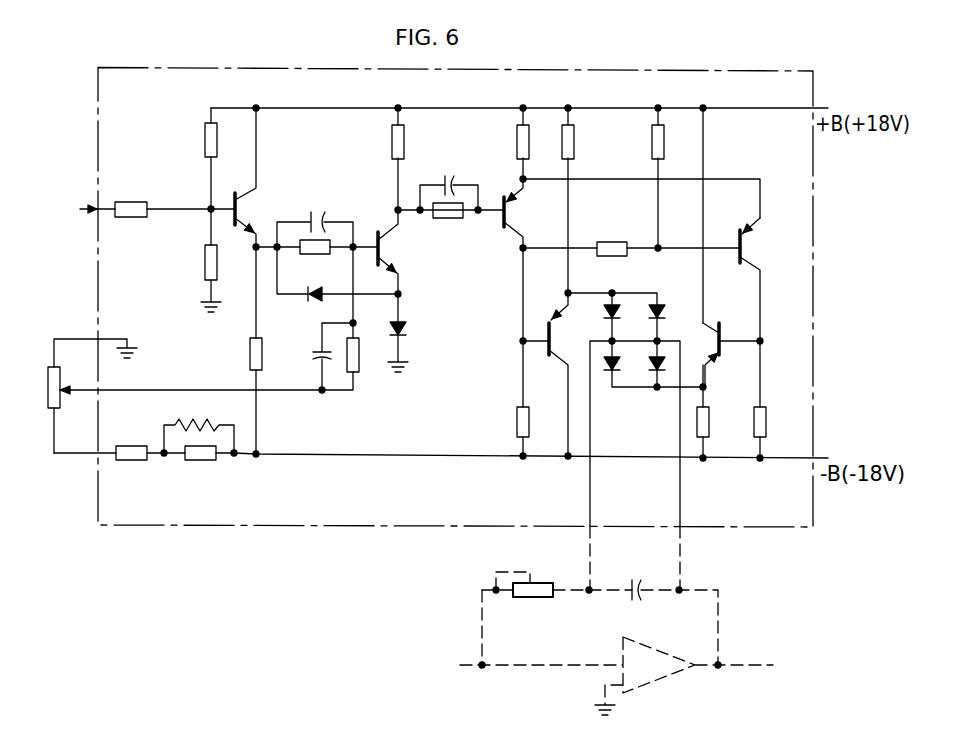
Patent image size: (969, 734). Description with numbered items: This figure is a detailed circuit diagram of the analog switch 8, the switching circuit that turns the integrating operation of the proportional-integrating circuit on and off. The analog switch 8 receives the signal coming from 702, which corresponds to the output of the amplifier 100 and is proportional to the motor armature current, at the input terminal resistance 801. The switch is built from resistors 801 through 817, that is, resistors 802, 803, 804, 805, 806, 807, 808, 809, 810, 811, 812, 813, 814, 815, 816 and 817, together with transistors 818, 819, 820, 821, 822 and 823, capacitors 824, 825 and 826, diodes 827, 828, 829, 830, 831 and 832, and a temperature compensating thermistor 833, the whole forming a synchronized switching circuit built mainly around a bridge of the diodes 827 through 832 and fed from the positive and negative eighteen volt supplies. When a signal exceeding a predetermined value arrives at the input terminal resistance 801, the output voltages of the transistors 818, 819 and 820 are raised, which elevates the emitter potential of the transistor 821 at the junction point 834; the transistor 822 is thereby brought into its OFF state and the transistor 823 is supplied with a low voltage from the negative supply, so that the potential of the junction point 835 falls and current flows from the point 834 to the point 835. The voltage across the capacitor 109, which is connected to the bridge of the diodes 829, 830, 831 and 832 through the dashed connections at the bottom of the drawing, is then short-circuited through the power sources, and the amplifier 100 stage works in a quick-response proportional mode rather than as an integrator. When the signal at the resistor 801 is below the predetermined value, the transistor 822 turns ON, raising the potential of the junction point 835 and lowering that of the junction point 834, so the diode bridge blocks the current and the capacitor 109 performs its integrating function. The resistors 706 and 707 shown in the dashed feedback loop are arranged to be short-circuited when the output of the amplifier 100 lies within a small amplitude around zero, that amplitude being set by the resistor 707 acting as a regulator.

The analog switch 8 is at (100, 103).
The input from element 702 is at (62, 188).
The input terminal resistance 801 is at (130, 202).
The resistor 802 is at (205, 266).
The resistor 803 is at (205, 140).
The resistor 804 is at (250, 355).
The resistor 805 is at (314, 254).
The resistor 806 is at (358, 362).
The resistor 807 is at (393, 140).
The resistor 808 is at (450, 218).
The resistor 809 is at (517, 145).
The resistor 810 is at (517, 418).
The resistor 811 is at (610, 242).
The resistor 812 is at (574, 145).
The resistor 813 is at (652, 146).
The resistor 814 is at (708, 430).
The resistor 815 is at (765, 412).
The resistor 816 is at (194, 460).
The resistor 817 is at (130, 460).
The transistor 818 is at (243, 210).
The transistor 819 is at (397, 264).
The transistor 820 is at (511, 205).
The transistor 821 is at (553, 358).
The transistor 822 is at (746, 248).
The transistor 823 is at (718, 338).
The capacitor 824 is at (316, 211).
The capacitor 825 is at (314, 355).
The capacitor 826 is at (448, 176).
The diode 827 is at (314, 301).
The diode 828 is at (408, 328).
The diode 829 is at (616, 322).
The diode 830 is at (609, 373).
The diode 831 is at (657, 303).
The diode 832 is at (654, 372).
The temperature compensating thermistor 833 is at (200, 420).
The junction point 834 is at (569, 292).
The junction point 835 is at (704, 388).
The resistor 707 is at (52, 380).
The resistor 706 is at (536, 598).
The capacitor 109 is at (640, 602).
The amplifier 100 is at (664, 660).